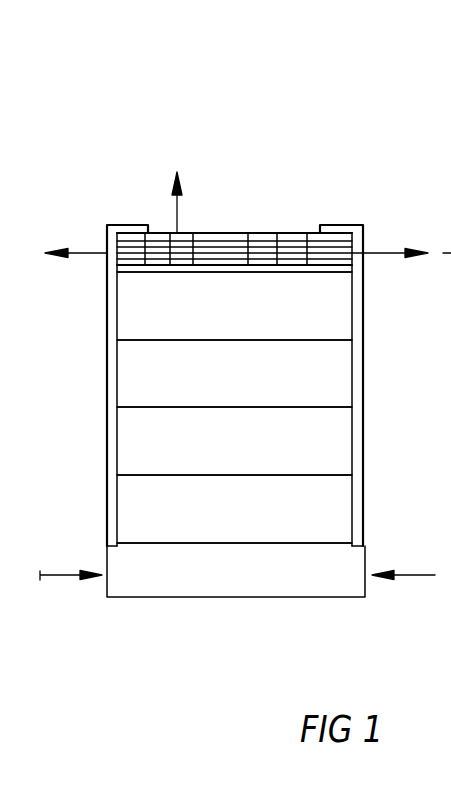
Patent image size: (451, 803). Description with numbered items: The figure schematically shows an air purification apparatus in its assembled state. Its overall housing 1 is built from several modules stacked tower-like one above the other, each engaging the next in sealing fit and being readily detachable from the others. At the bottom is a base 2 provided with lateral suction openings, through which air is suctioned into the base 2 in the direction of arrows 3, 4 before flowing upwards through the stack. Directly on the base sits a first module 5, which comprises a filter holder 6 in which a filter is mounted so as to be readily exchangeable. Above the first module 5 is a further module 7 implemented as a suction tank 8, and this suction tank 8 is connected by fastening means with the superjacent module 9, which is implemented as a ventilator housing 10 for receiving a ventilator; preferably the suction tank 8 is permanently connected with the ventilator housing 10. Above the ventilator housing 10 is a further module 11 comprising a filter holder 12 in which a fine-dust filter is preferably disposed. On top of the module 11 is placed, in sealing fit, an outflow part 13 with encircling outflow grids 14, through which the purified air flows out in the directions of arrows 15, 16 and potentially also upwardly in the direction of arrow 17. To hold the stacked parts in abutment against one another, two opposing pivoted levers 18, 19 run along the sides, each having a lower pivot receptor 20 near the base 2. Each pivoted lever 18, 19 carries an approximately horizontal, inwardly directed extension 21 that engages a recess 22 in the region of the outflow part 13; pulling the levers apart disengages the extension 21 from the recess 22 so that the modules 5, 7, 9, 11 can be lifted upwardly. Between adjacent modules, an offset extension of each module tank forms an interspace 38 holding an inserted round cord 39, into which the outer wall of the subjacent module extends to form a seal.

The housing 1 is at (245, 373).
The base 2 is at (263, 573).
The arrow 3 is at (423, 578).
The arrow 4 is at (58, 577).
The first module 5 is at (277, 509).
The filter holder 6 is at (330, 513).
The further module 7 is at (277, 441).
The suction tank 8 is at (332, 447).
The module 9 is at (283, 373).
The ventilator housing 10 is at (338, 386).
The further module 11 is at (283, 306).
The filter holder 12 is at (338, 316).
The outflow part 13 is at (234, 191).
The outflow grids 14 is at (234, 191).
The arrow 15 is at (88, 243).
The arrow 16 is at (376, 253).
The arrow 17 is at (178, 211).
The pivoted lever 18 is at (106, 363).
The pivoted lever 19 is at (362, 343).
The lower pivot receptor 20 is at (107, 545).
The extension 21 is at (130, 225).
The recess 22 is at (157, 233).
The interspace 38 is at (234, 603).
The round cord 39 is at (160, 541).